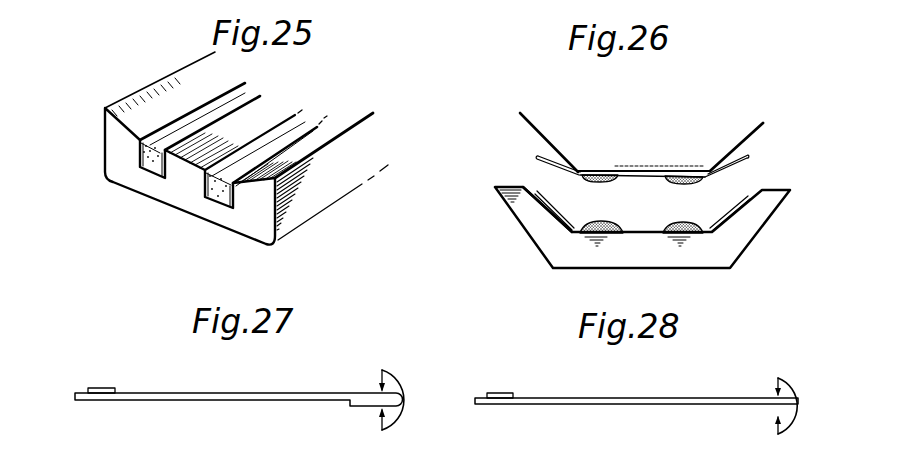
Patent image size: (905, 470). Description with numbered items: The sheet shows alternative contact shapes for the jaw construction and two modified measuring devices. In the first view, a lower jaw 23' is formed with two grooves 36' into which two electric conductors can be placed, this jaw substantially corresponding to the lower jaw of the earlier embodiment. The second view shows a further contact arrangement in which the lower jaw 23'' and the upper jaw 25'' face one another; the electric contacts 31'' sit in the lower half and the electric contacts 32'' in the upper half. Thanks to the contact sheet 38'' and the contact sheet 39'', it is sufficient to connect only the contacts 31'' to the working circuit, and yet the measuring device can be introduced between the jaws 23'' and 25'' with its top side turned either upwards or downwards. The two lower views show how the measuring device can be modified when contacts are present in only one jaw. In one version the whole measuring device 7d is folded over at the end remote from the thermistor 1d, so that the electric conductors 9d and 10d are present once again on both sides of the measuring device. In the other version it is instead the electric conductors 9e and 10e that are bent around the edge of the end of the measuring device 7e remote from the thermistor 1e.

In FIG. 25, the lower jaw 23' is at (246, 148).
In FIG. 25, the grooves 36' is at (186, 195).
In FIG. 25, the electric contacts 31'' is at (229, 118).
In FIG. 26, the electric contacts 31'' is at (641, 204).
In FIG. 26, the lower jaw 23'' is at (634, 227).
In FIG. 26, the upper jaw 25'' is at (610, 135).
In FIG. 26, the contact sheet 39'' is at (651, 150).
In FIG. 26, the electric contacts 32'' is at (642, 148).
In FIG. 26, the contact sheet 38'' is at (642, 208).
In FIG. 27, the thermistor 1d is at (103, 388).
In FIG. 27, the measuring device 7d is at (200, 393).
In FIG. 27, the electric conductor 9d is at (414, 383).
In FIG. 27, the electric conductor 10d is at (443, 355).
In FIG. 28, the thermistor 1e is at (498, 390).
In FIG. 28, the measuring device 7e is at (595, 397).
In FIG. 28, the electric conductor 9e is at (783, 387).
In FIG. 28, the electric conductor 10e is at (810, 357).